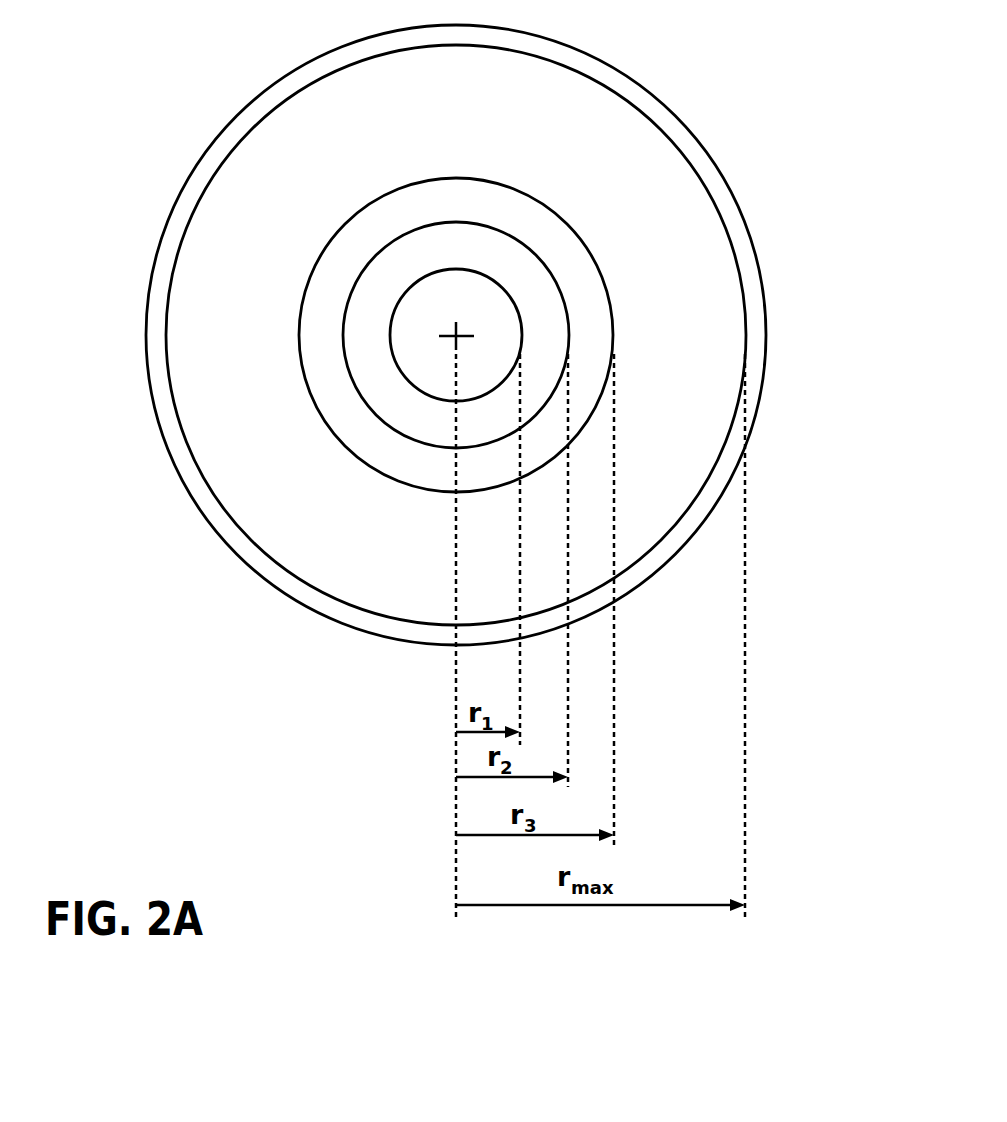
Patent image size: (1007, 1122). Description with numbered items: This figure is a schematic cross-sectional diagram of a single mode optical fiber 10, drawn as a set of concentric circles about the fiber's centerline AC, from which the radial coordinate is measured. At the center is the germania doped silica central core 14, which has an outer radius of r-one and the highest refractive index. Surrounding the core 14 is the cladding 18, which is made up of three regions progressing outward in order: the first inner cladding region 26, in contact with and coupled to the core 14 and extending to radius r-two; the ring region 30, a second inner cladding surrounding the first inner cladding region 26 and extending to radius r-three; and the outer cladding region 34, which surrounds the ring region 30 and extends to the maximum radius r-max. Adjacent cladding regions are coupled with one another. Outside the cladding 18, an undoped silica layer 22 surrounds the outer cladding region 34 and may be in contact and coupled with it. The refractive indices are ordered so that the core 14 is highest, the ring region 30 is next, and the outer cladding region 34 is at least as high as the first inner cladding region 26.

The single mode optical fiber 10 is at (192, 103).
The germania doped silica central core 14 is at (435, 308).
The cladding 18 is at (837, 18).
The undoped silica layer 22 is at (158, 374).
The first inner cladding region 26 is at (517, 278).
The ring region 30 is at (583, 290).
The outer cladding region 34 is at (670, 285).
The centerline AC is at (450, 338).